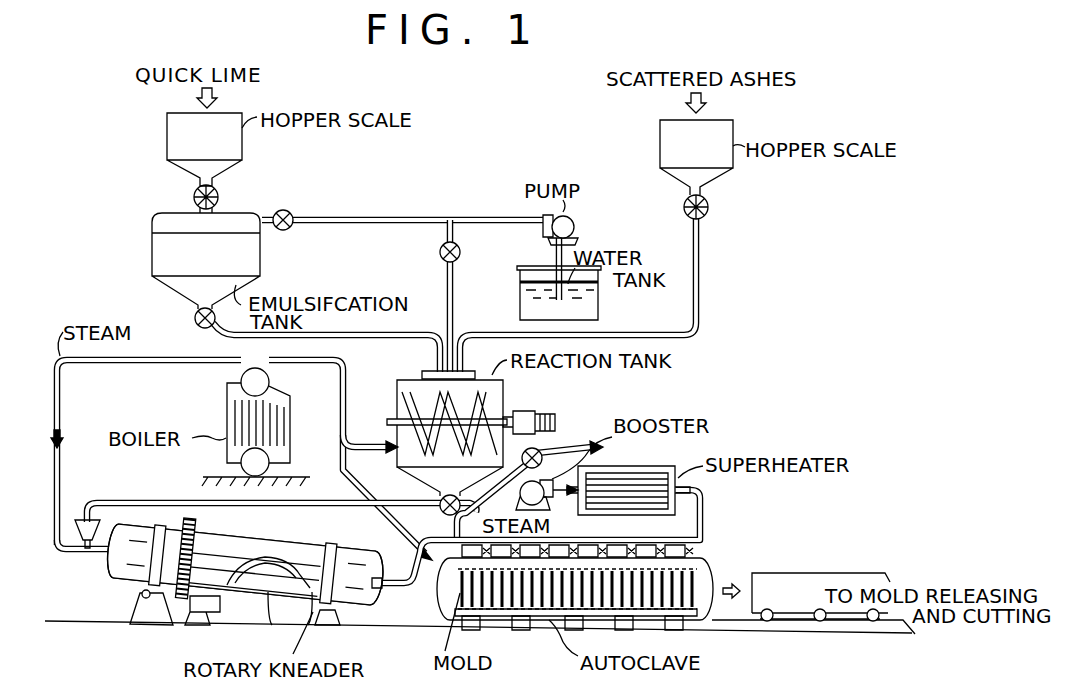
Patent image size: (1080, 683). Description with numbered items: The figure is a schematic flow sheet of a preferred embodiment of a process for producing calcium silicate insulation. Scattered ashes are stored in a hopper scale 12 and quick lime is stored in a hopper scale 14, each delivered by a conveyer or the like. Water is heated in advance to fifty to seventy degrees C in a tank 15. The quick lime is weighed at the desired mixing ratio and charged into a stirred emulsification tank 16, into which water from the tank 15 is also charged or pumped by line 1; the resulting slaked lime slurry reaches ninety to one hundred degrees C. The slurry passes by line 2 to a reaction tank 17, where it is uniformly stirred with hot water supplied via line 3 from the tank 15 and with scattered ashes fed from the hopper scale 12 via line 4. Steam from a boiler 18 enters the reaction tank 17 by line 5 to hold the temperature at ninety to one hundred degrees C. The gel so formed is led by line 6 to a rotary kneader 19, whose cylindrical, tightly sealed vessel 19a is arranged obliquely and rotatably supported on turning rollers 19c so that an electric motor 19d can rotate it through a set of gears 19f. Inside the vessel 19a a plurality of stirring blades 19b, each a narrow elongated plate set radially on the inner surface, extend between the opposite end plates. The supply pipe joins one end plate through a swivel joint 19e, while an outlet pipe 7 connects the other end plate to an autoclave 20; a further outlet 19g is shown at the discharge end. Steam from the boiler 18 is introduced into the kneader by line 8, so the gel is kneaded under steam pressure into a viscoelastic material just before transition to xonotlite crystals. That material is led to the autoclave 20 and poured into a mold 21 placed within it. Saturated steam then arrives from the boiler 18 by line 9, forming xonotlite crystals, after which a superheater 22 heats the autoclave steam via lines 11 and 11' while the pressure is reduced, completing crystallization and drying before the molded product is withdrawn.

The line 1 is at (411, 215).
The line 2 is at (368, 340).
The line 3 is at (451, 286).
The line 4 is at (699, 285).
The line 5 is at (368, 447).
The line 6 is at (152, 476).
The outlet pipe 7 is at (425, 575).
The line 8 is at (196, 362).
The line 9 is at (362, 472).
The line 11 is at (721, 528).
The line 11' is at (505, 489).
The hopper scale 12 is at (660, 147).
The hopper scale 14 is at (242, 150).
The tank 15 is at (598, 308).
The emulsification tank 16 is at (258, 266).
The reaction tank 17 is at (503, 390).
The boiler 18 is at (290, 423).
The rotary kneader 19 is at (244, 583).
The vessel 19a is at (281, 546).
The stirring blades 19b is at (277, 603).
The turning rollers 19c is at (144, 596).
The electric motor 19d is at (220, 606).
The swivel joint 19e is at (89, 549).
The set of gears 19f is at (190, 540).
The kneader outlet 19g is at (394, 599).
The autoclave 20 is at (558, 566).
The mold 21 is at (575, 573).
The superheater 22 is at (650, 470).